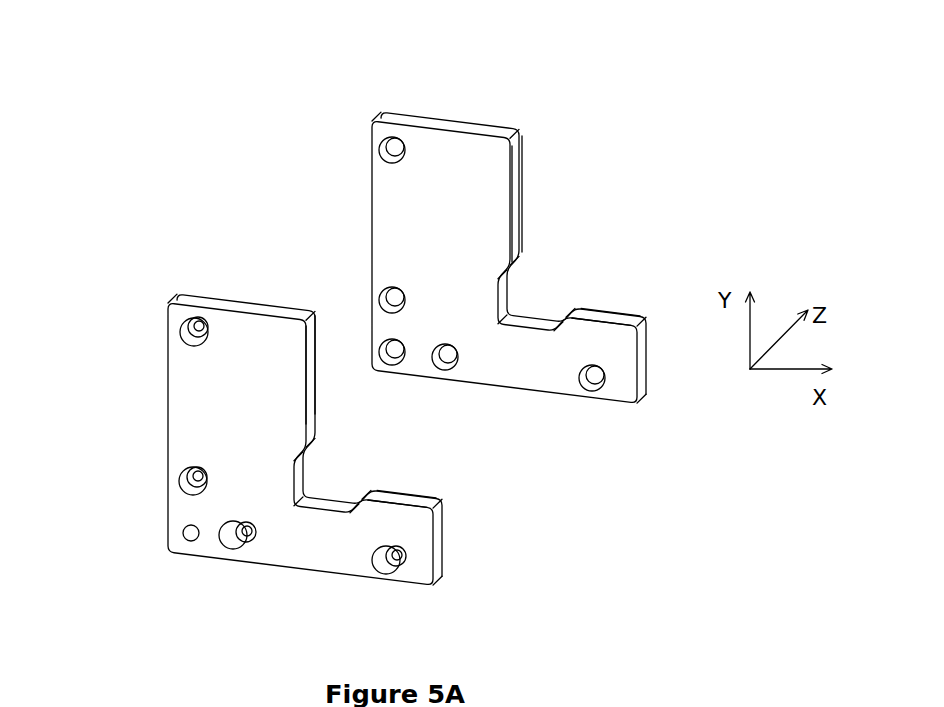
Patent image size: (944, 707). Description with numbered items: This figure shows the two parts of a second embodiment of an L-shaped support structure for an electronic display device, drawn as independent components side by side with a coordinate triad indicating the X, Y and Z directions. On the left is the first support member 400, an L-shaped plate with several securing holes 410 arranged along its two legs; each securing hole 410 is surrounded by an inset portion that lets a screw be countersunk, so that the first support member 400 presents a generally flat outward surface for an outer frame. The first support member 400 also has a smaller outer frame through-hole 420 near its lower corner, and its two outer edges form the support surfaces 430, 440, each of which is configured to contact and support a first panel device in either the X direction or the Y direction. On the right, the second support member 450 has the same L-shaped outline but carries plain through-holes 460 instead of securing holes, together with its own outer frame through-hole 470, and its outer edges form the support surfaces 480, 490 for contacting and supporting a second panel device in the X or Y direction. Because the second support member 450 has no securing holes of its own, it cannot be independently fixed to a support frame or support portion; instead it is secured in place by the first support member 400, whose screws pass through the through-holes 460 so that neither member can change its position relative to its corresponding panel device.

The first support member 400 is at (163, 282).
The securing holes 410 is at (196, 347).
The outer frame through-hole 420 is at (199, 555).
The support surface 430 is at (324, 392).
The support surface 440 is at (406, 493).
The second support member 450 is at (361, 110).
The through-holes 460 is at (399, 175).
The outer frame through-hole 470 is at (404, 382).
The support surface 480 is at (529, 206).
The support surface 490 is at (610, 308).